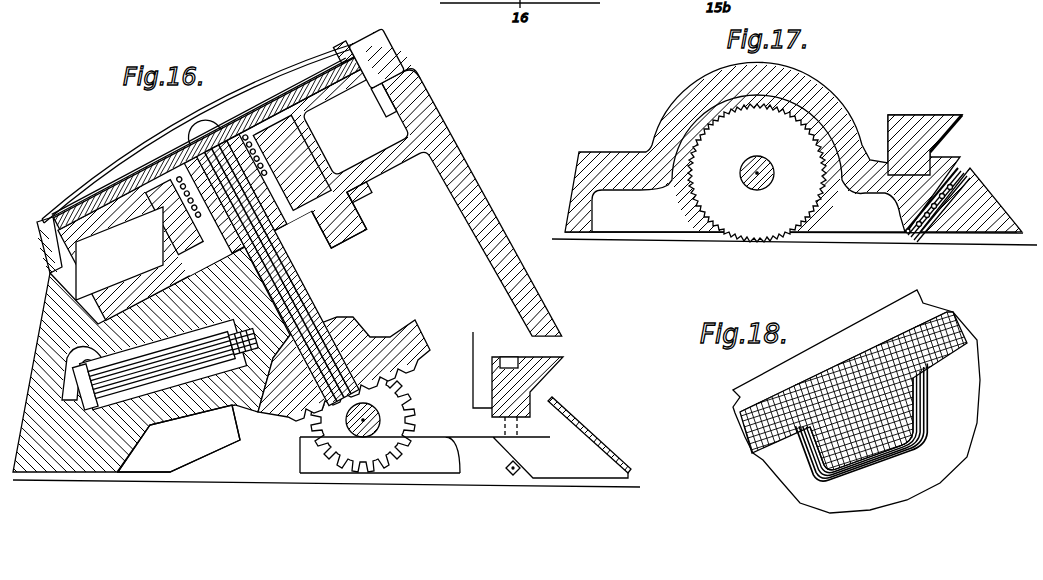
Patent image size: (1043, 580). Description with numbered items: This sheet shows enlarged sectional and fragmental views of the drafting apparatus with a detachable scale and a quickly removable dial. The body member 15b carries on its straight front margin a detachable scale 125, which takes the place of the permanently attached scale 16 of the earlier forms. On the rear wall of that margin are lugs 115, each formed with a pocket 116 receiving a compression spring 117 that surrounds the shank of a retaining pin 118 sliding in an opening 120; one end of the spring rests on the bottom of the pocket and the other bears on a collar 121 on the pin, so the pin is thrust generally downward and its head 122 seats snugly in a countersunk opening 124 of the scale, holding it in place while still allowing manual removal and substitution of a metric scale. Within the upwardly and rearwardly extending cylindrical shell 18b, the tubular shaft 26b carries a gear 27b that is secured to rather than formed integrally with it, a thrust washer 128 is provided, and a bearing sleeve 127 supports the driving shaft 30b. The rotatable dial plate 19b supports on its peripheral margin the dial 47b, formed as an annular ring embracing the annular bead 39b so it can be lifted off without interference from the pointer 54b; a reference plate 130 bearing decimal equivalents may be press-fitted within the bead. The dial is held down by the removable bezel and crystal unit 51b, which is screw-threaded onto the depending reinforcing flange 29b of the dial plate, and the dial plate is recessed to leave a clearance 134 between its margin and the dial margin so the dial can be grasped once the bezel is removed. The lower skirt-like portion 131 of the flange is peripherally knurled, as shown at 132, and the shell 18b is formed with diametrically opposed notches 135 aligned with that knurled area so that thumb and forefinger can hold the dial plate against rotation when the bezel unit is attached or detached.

In FIG. 16, the cylindrical shell 18b is at (482, 194).
In FIG. 16, the bezel and crystal unit 51b is at (38, 238).
In FIG. 18, the bezel and crystal unit 51b is at (950, 330).
In FIG. 16, the annular bead 39b is at (90, 210).
In FIG. 16, the pointer 54b is at (277, 82).
In FIG. 16, the reference plate 130 is at (103, 198).
In FIG. 16, the dial 47b is at (368, 52).
In FIG. 16, the clearance 134 is at (393, 60).
In FIG. 16, the skirt-like portion 131 is at (426, 101).
In FIG. 16, the dial plate 19b is at (356, 125).
In FIG. 16, the depending reinforcing flange 29b is at (380, 98).
In FIG. 16, the thrust washer 128 is at (356, 210).
In FIG. 16, the gear 27b is at (358, 226).
In FIG. 16, the tubular shaft 26b is at (322, 299).
In FIG. 16, the shaft 30b is at (95, 420).
In FIG. 16, the bearing sleeve 127 is at (182, 422).
In FIG. 16, the detachable scale 125 is at (569, 428).
In FIG. 17, the detachable scale 125 is at (962, 192).
In FIG. 16, the lugs 115 is at (556, 470).
In FIG. 16, the retaining pin 118 is at (512, 474).
In FIG. 17, the retaining pin 118 is at (908, 234).
In FIG. 17, the body member 15b is at (763, 147).
In FIG. 17, the scale 16 is at (757, 173).
In FIG. 17, the heads 122 is at (964, 170).
In FIG. 17, the pocket 116 is at (1000, 206).
In FIG. 17, the countersunk openings 124 is at (958, 163).
In FIG. 17, the opening 120 is at (962, 182).
In FIG. 17, the compression spring 117 is at (940, 178).
In FIG. 17, the collar 121 is at (930, 238).
In FIG. 18, the knurled periphery 132 is at (902, 406).
In FIG. 18, the notches 135 is at (833, 467).